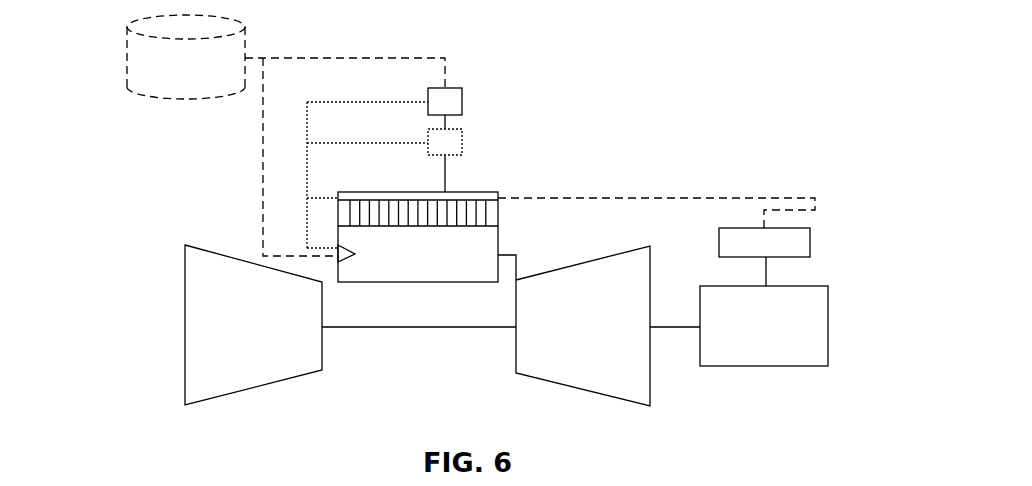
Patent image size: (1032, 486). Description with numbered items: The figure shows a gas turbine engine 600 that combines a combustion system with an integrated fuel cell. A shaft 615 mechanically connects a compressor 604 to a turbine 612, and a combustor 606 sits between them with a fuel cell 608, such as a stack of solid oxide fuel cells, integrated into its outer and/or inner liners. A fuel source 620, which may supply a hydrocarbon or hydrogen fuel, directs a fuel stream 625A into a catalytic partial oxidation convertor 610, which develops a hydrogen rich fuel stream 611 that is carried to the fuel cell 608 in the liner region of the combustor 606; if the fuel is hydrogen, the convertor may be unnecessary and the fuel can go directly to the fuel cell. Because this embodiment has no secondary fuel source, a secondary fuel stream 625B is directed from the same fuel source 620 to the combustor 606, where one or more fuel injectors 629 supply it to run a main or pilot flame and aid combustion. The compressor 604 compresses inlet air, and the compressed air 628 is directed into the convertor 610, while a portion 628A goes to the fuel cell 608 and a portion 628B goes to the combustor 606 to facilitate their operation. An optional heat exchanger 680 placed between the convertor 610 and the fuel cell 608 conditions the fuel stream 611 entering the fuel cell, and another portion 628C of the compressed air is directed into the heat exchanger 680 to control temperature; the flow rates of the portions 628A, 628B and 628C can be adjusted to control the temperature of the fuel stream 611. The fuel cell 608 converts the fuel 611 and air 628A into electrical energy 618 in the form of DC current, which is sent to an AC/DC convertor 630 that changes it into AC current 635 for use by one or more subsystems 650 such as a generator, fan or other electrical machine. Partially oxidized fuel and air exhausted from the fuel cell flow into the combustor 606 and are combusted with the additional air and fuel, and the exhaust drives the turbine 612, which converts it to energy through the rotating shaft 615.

The gas turbine engine 600 is at (821, 31).
The compressor 604 is at (252, 390).
The combustor 606 is at (500, 242).
The fuel cell 608 is at (490, 210).
The catalytic partial oxidation (C-POX) convertor 610 is at (453, 87).
The hydrogen rich fuel stream 611 is at (447, 180).
The turbine 612 is at (583, 389).
The shaft 615 is at (447, 328).
The electrical energy 618 is at (725, 198).
The fuel source 620 is at (127, 53).
The fuel stream 625A is at (340, 57).
The secondary fuel stream 625B is at (262, 177).
The compressed air 628 is at (362, 100).
The portion of compressed air 628A is at (327, 197).
The portion of compressed air 628B is at (325, 248).
The portion of compressed air 628C is at (405, 142).
The fuel injector 629 is at (350, 258).
The AC/DC convertor 630 is at (810, 235).
The AC current 635 is at (764, 275).
The subsystem 650 is at (798, 285).
The heat exchanger 680 is at (462, 138).